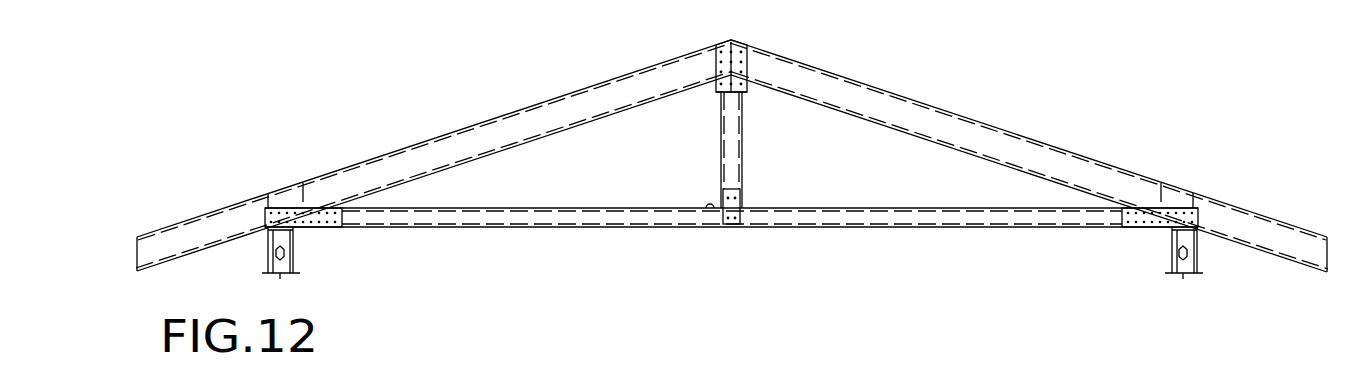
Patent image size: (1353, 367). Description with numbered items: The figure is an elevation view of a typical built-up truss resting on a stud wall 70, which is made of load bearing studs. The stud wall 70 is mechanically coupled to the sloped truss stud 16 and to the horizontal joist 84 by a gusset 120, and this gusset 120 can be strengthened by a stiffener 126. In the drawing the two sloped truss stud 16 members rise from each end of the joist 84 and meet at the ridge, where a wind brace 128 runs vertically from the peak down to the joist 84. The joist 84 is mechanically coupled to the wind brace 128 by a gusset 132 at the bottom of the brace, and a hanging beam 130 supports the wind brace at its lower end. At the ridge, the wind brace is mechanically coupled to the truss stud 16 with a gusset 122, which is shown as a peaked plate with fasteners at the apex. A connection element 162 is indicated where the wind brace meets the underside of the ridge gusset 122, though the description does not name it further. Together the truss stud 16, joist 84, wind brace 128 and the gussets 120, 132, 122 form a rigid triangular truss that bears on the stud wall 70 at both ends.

The truss stud 16 is at (890, 93).
The joist 84 is at (968, 226).
The gusset 120 is at (265, 206).
The stiffener 126 is at (1194, 193).
The gusset 122 is at (717, 50).
The web to apex plate connection 162 is at (722, 92).
The wind brace 128 is at (743, 143).
The hanging beam 130 is at (711, 200).
The gusset 132 is at (727, 226).
The stud wall 70 is at (1196, 251).